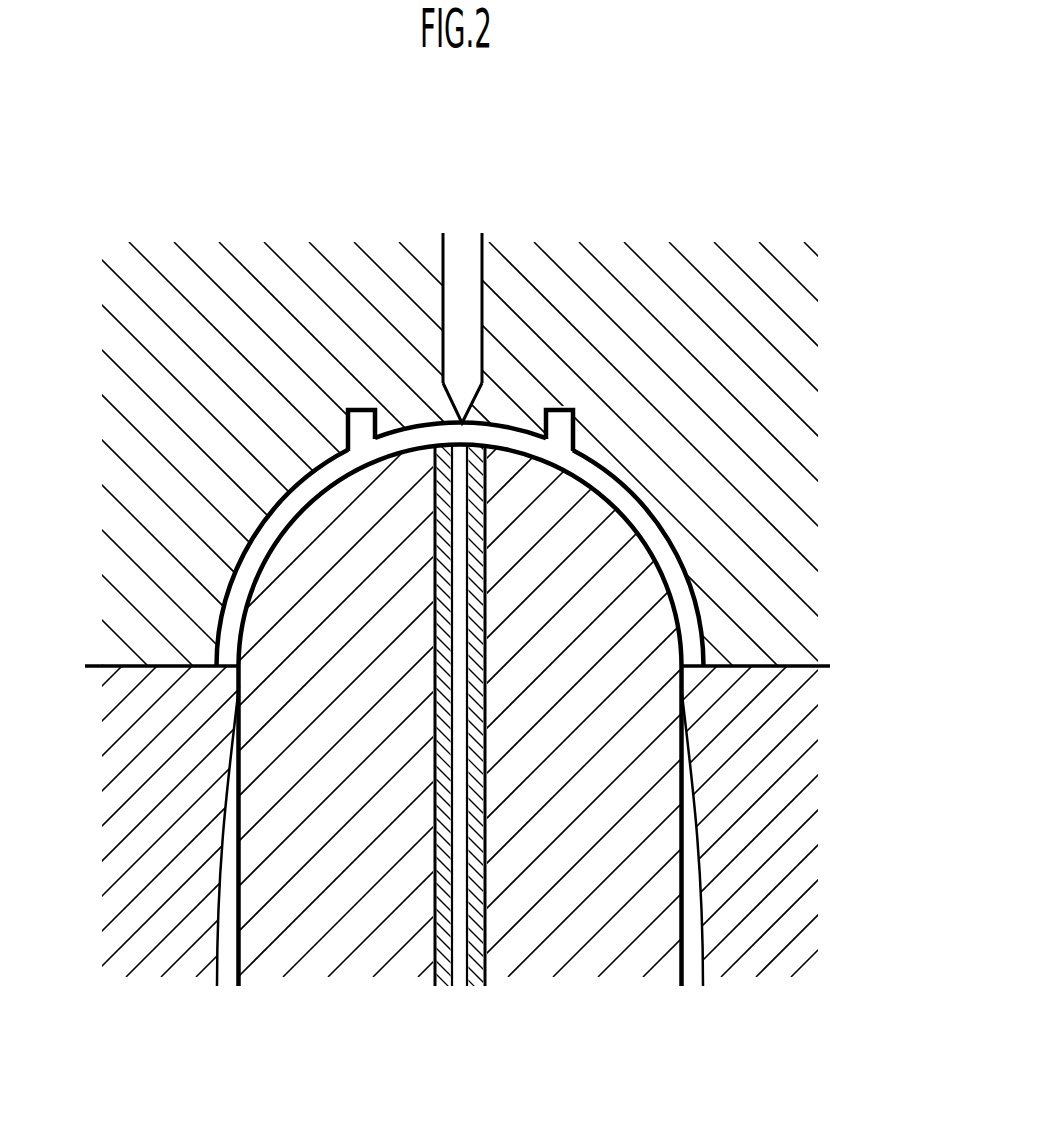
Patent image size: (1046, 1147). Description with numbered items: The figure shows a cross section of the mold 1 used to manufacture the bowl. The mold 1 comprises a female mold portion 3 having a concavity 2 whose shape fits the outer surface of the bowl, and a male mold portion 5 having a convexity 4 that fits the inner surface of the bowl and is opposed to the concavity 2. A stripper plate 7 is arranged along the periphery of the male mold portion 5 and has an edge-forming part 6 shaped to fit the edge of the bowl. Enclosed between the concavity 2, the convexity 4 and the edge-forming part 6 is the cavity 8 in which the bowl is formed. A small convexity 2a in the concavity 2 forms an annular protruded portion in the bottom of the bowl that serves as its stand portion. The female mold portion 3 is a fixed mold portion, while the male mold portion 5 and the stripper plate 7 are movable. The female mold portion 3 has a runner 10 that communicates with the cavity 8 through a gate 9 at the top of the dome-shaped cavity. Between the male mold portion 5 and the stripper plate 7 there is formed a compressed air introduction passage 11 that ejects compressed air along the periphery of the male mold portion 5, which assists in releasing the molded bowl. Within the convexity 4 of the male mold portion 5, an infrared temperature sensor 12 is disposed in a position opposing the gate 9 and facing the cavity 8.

The mold 1 is at (796, 184).
The concavity 2 is at (460, 698).
The convexity for forming an annular protruded portion 2a is at (573, 440).
The female mold portion 3 is at (740, 378).
The convexity 4 is at (263, 559).
The male mold portion 5 is at (351, 930).
The edge-forming part 6 is at (222, 665).
The stripper plate 7 is at (157, 790).
The cavity 8 is at (660, 547).
The gate 9 is at (470, 418).
The runner 10 is at (508, 328).
The compressed air introduction passage 11 is at (228, 972).
The infrared temperature sensor 12 is at (480, 932).